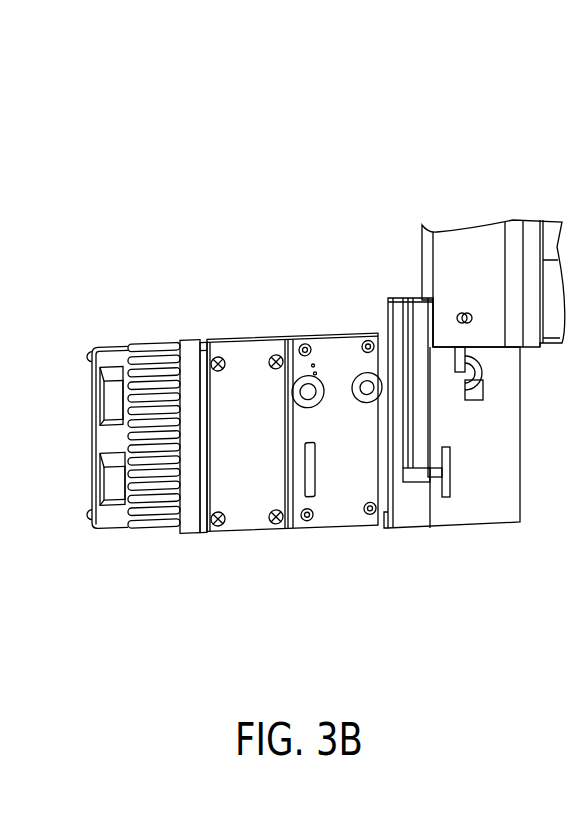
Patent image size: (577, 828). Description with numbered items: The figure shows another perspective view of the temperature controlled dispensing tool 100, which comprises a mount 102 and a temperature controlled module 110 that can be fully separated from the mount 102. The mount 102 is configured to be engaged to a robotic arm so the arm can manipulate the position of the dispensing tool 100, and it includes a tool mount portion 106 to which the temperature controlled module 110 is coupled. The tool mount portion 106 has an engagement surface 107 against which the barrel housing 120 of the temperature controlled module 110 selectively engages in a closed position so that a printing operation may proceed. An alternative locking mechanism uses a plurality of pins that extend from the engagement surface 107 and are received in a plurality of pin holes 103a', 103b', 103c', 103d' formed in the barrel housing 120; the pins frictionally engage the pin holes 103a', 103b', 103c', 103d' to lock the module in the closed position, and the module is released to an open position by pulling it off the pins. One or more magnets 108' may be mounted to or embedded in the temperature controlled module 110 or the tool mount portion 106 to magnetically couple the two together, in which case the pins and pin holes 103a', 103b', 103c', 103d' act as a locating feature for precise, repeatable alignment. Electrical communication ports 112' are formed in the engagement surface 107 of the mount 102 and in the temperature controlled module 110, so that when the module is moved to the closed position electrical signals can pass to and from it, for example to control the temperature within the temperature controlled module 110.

The temperature controlled dispensing tool 100 is at (192, 123).
The mount 102 is at (488, 197).
The pin hole 103a' is at (323, 562).
The pin hole 103b' is at (289, 317).
The pin hole 103c' is at (386, 556).
The pin hole 103d' is at (357, 313).
The tool mount portion 106 is at (485, 555).
The engagement surface 107 is at (388, 530).
The magnet 108' is at (260, 433).
The temperature controlled module 110 is at (185, 287).
The electrical communication port 112' is at (274, 470).
The barrel housing 120 is at (248, 580).